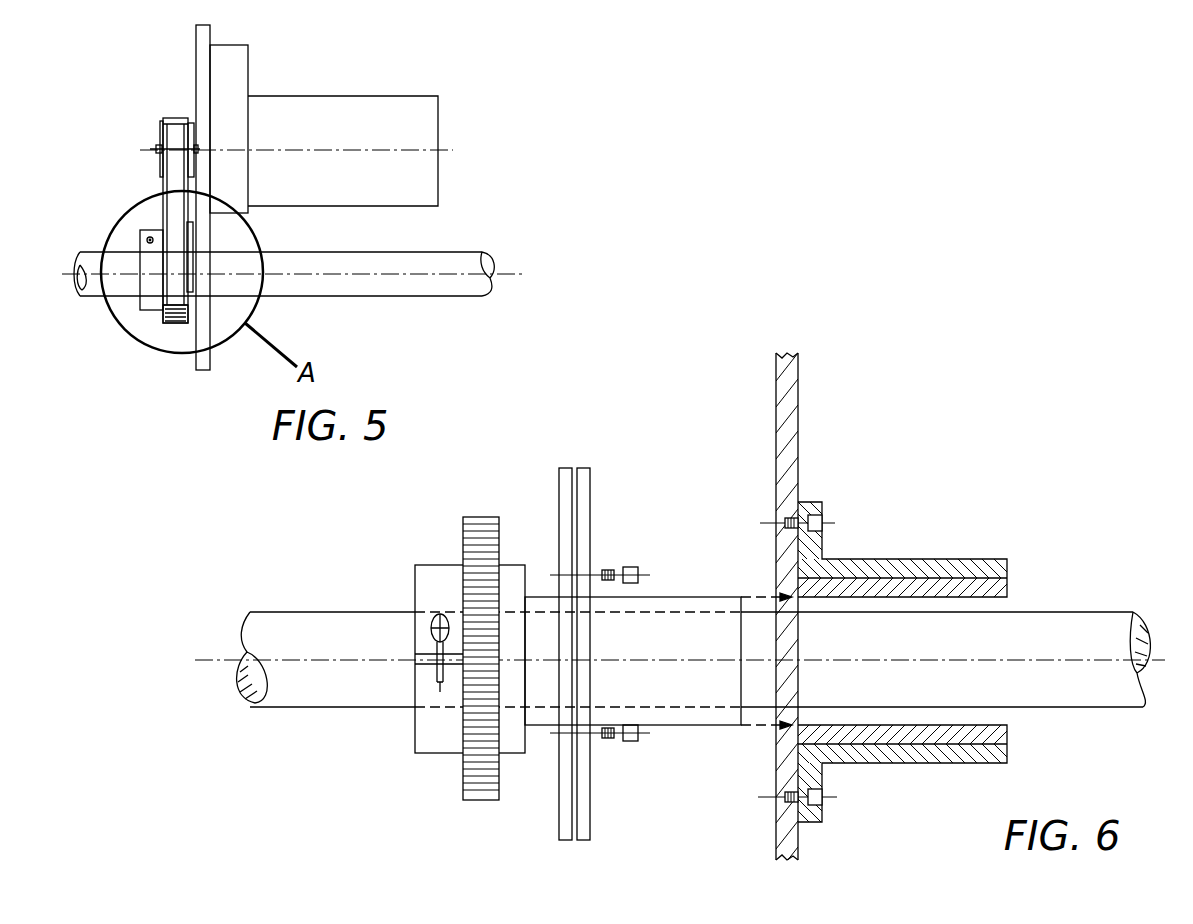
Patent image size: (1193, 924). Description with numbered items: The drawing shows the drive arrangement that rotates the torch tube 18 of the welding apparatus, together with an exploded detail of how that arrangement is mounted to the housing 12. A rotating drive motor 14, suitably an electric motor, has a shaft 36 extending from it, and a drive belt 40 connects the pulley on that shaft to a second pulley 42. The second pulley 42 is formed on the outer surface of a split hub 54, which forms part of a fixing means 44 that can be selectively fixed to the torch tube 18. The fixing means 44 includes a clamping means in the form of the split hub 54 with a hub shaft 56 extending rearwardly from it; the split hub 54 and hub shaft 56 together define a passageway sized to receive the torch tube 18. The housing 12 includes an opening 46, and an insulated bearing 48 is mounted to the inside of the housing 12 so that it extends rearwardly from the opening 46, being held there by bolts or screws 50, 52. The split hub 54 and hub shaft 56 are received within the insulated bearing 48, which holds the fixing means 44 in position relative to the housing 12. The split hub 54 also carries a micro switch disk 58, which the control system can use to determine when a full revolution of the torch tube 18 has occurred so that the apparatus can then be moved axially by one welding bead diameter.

In FIG. 5, the housing 12 is at (208, 33).
In FIG. 6, the housing 12 is at (795, 395).
In FIG. 5, the rotating drive motor 14 is at (408, 107).
In FIG. 5, the torch tube 18 is at (393, 287).
In FIG. 6, the torch tube 18 is at (1065, 625).
In FIG. 5, the shaft 36 is at (156, 146).
In FIG. 5, the drive belt 40 is at (176, 170).
In FIG. 5, the second pulley 42 is at (156, 320).
In FIG. 6, the second pulley 42 is at (478, 525).
In FIG. 5, the fixing means 44 is at (138, 238).
In FIG. 6, the opening 46 is at (773, 710).
In FIG. 6, the insulated bearing 48 is at (943, 585).
In FIG. 6, the bolt or screw 50 is at (825, 797).
In FIG. 6, the bolt or screw 52 is at (823, 520).
In FIG. 6, the split hub 54 is at (432, 742).
In FIG. 6, the hub shaft 56 is at (690, 713).
In FIG. 6, the micro switch disk 58 is at (585, 477).